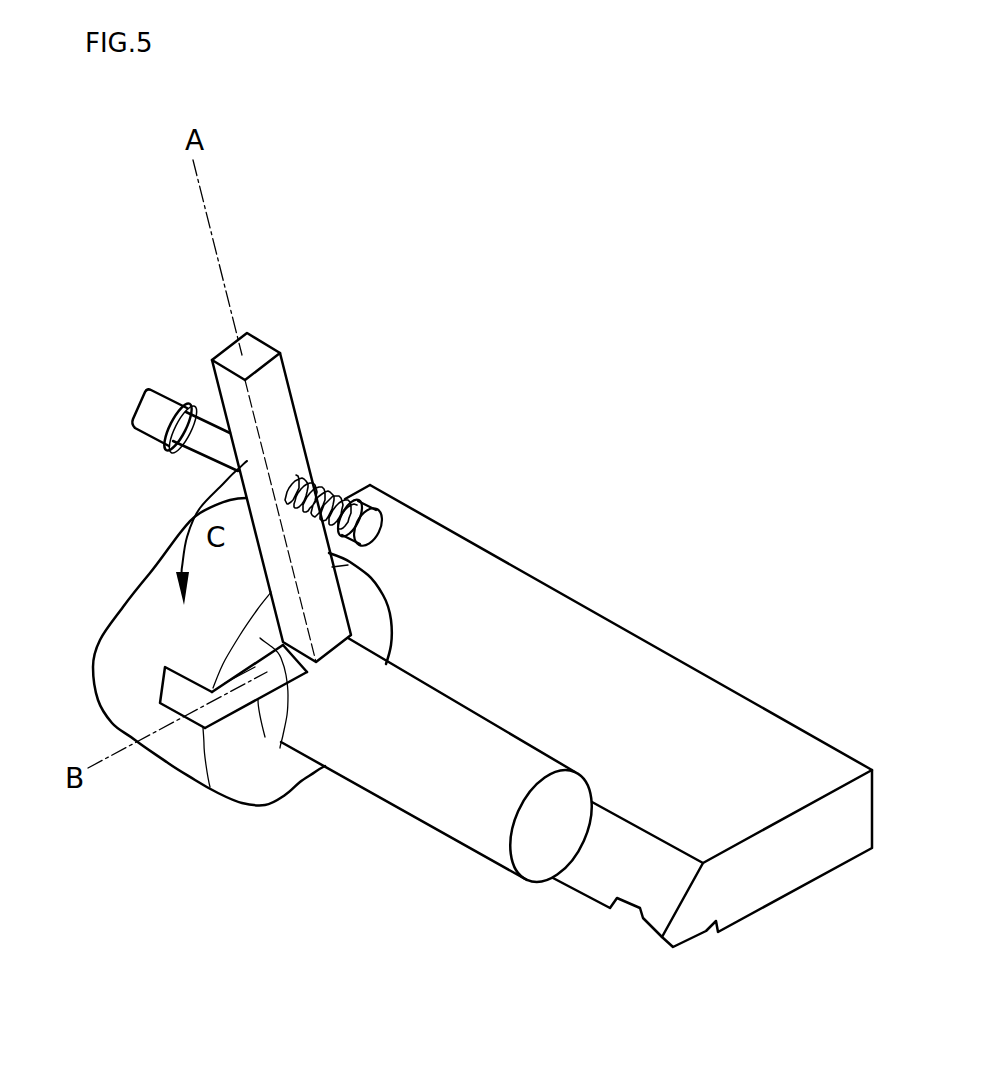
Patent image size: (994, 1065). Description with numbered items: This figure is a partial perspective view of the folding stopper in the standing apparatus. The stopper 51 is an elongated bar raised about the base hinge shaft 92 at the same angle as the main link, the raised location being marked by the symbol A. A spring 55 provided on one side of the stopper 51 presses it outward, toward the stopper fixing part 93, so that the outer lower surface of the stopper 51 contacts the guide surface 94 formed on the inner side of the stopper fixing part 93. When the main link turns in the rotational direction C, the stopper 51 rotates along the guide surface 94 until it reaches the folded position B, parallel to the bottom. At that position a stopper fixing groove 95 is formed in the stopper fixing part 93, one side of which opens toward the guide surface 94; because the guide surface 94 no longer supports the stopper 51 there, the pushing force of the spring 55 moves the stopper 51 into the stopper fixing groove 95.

The stopper 51 is at (252, 350).
The spring 55 is at (333, 483).
The base hinge shaft 92 is at (420, 700).
The stopper fixing part 93 is at (181, 764).
The guide surface 94 is at (280, 748).
The stopper fixing groove 95 is at (188, 693).